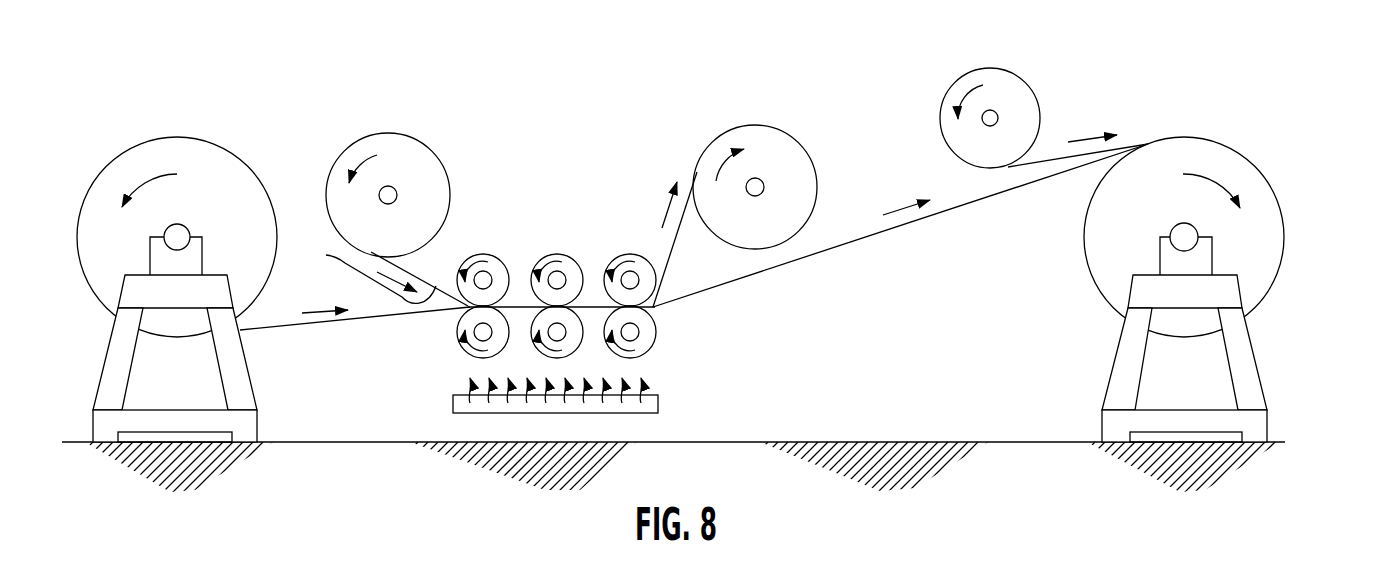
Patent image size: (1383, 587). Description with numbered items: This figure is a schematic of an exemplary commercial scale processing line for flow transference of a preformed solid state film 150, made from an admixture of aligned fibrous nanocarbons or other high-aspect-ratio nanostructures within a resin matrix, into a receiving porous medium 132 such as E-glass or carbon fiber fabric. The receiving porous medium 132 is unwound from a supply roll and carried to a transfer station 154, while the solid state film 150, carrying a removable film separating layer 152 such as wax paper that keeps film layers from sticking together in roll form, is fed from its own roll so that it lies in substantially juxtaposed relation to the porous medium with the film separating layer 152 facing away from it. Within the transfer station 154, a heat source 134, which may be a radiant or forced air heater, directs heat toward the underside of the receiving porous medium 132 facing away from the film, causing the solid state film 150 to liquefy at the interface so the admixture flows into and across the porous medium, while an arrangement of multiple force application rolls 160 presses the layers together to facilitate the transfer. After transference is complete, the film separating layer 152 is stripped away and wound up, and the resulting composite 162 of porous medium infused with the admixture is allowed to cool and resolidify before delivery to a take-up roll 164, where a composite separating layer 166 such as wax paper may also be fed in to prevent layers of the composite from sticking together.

The receiving porous medium 132 is at (319, 323).
The heat source 134 is at (658, 410).
The solid state film 150 is at (379, 219).
The film separating layer 152 is at (671, 239).
The transfer station 154 is at (645, 238).
The force application rolls 160 is at (464, 262).
The composite 162 is at (905, 223).
The take-up roll 164 is at (1283, 222).
The composite separating layer 166 is at (1046, 160).